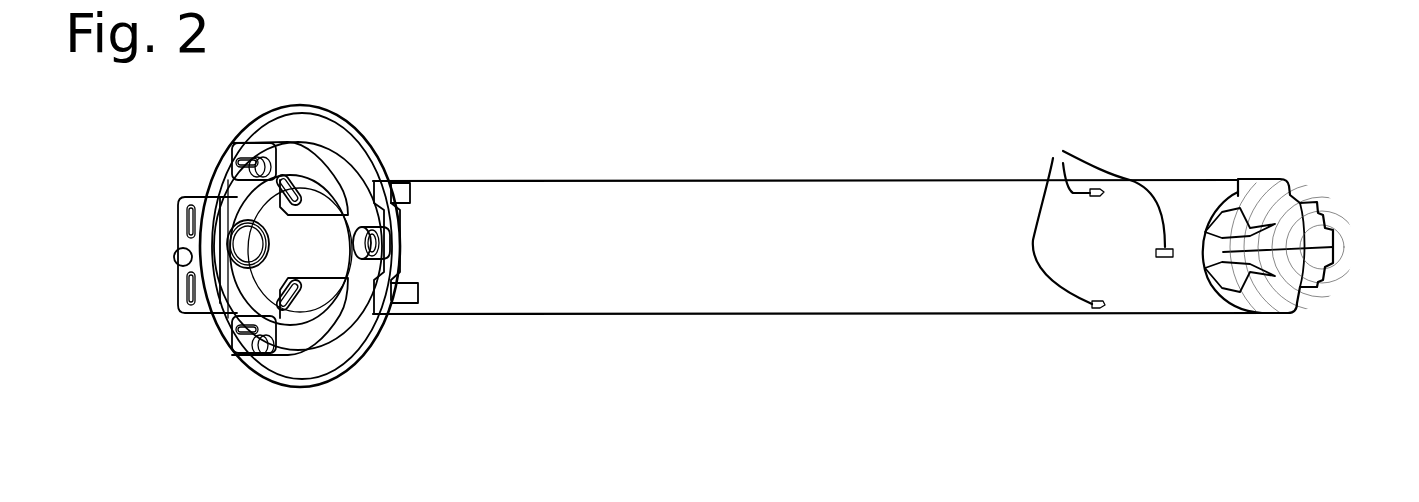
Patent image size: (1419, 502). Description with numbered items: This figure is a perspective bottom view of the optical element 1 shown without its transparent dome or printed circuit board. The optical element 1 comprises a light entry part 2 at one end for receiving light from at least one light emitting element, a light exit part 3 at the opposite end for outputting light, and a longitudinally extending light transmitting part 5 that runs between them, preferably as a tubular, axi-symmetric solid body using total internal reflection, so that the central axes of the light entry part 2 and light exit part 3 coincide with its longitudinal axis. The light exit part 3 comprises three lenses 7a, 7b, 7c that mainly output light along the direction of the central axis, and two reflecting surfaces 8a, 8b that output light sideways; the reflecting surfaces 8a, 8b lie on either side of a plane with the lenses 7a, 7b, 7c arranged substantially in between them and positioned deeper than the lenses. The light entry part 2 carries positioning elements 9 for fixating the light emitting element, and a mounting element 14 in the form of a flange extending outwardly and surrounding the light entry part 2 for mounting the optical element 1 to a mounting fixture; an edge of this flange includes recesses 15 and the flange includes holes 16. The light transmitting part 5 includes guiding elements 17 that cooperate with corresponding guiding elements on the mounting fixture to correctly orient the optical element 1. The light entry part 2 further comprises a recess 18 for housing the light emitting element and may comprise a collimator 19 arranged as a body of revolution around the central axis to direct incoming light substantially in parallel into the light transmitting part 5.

The optical element 1 is at (1171, 139).
The light entry part 2 is at (366, 125).
The light exit part 3 is at (1302, 179).
The light transmitting part 5 is at (676, 181).
The lens 7a is at (1327, 232).
The lens 7b is at (1300, 262).
The lens 7c is at (1225, 252).
The reflecting surface 8a is at (1238, 196).
The reflecting surface 8b is at (1275, 312).
The positioning elements 9 is at (293, 153).
The mounting element 14 is at (331, 130).
The recess 15 is at (404, 183).
The hole 16 is at (370, 258).
The guiding element 17 is at (1103, 218).
The recess 18 is at (247, 237).
The collimator 19 is at (307, 260).